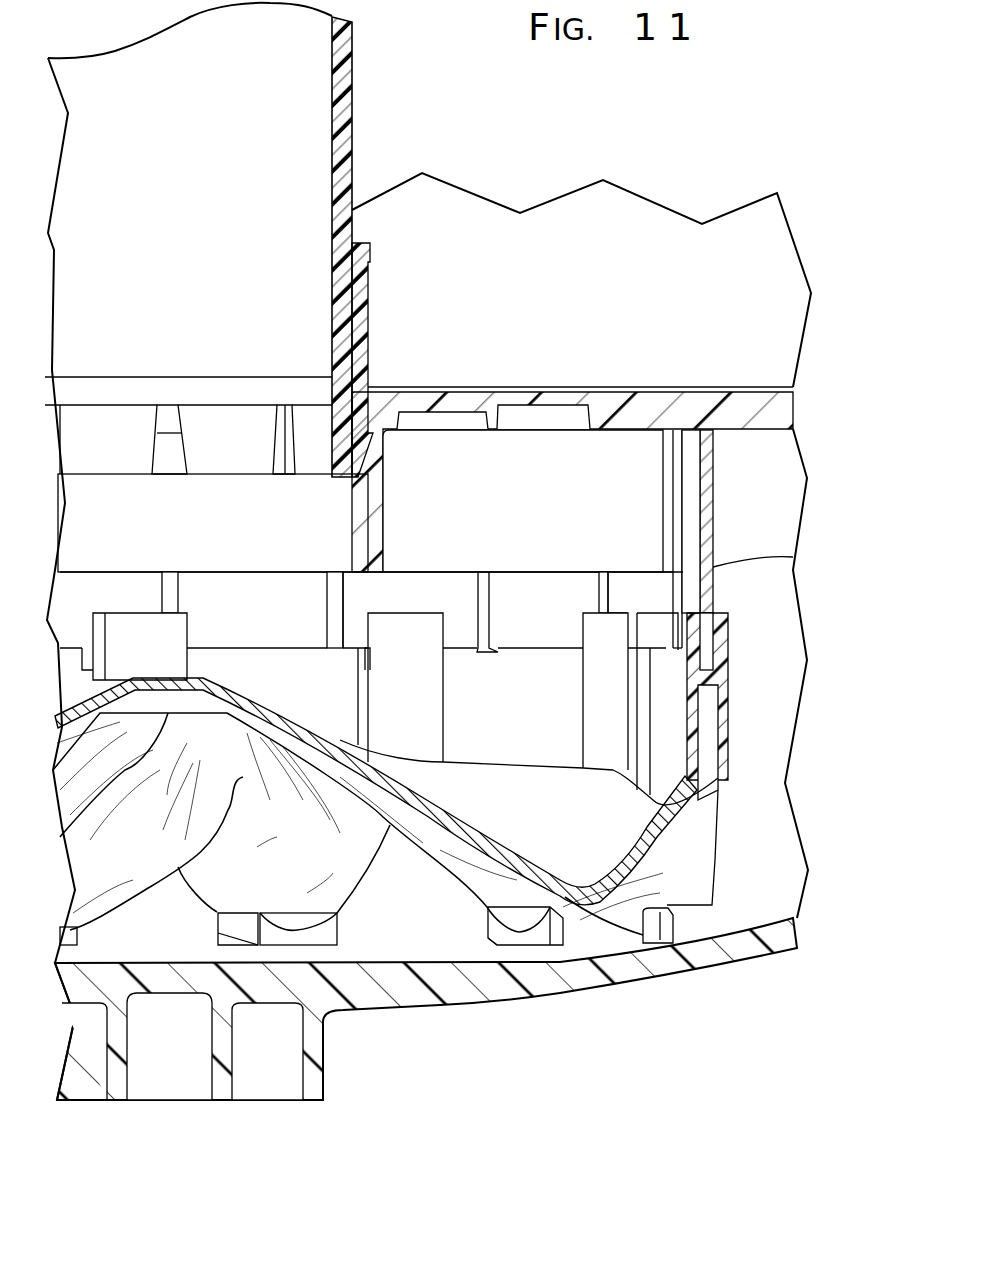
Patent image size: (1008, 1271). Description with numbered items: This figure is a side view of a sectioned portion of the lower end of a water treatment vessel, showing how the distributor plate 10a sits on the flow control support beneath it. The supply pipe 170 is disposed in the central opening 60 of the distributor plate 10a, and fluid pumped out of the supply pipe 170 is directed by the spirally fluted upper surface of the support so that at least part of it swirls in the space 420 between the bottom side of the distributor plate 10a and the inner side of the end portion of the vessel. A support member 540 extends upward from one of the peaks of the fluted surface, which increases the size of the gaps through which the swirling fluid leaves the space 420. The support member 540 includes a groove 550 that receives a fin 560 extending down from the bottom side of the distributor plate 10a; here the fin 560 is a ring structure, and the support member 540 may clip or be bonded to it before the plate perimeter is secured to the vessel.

The supply pipe 170 is at (352, 107).
The distributor plate 10a is at (500, 400).
The central opening 60 is at (242, 539).
The fin 560 is at (713, 585).
The groove 550 is at (713, 630).
The support member 540 is at (718, 703).
The space 420 is at (317, 703).